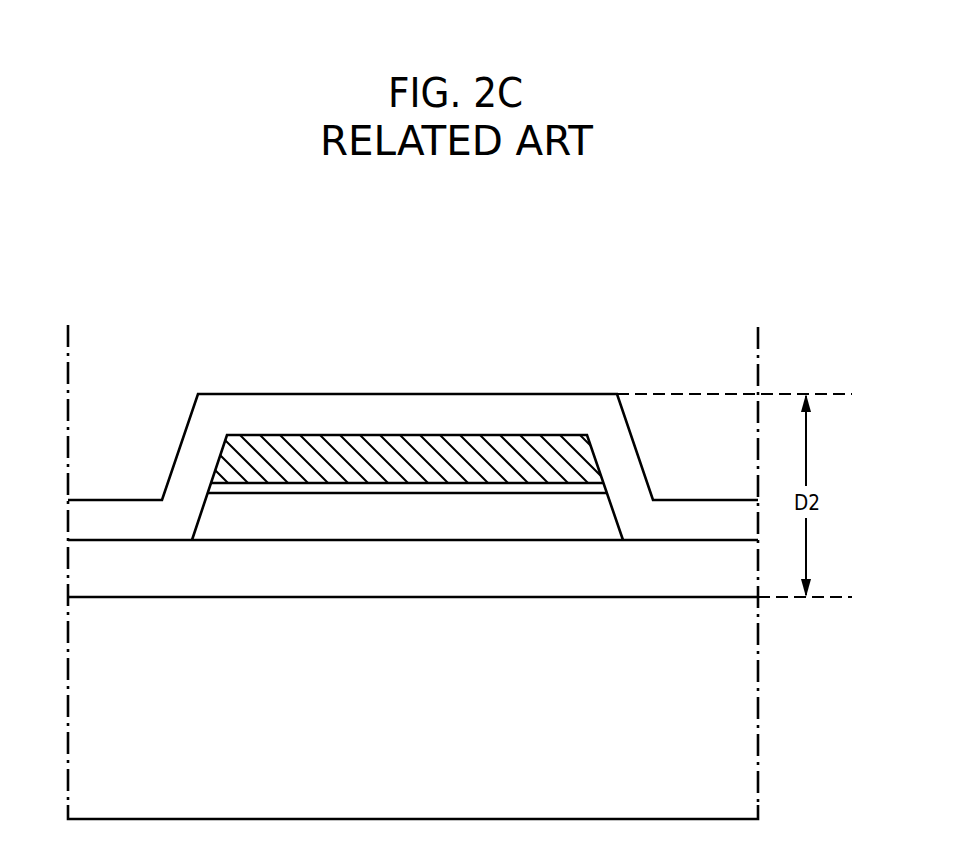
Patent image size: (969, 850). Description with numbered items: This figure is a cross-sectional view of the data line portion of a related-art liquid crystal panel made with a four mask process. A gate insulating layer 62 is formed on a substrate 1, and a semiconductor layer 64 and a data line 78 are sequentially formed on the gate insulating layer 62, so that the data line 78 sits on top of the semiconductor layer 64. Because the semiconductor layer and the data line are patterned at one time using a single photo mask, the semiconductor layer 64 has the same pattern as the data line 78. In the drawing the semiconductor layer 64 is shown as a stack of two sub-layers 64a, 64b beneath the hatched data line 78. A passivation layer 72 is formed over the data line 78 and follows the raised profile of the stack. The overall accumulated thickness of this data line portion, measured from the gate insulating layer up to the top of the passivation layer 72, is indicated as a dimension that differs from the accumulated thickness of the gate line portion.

The substrate 1 is at (428, 736).
The gate insulating layer 62 is at (650, 573).
The semiconductor layer 64 is at (407, 575).
The active layer 64a is at (254, 519).
The ohmic contact layer 64b is at (333, 488).
The passivation layer 72 is at (500, 407).
The data line 78 is at (378, 460).